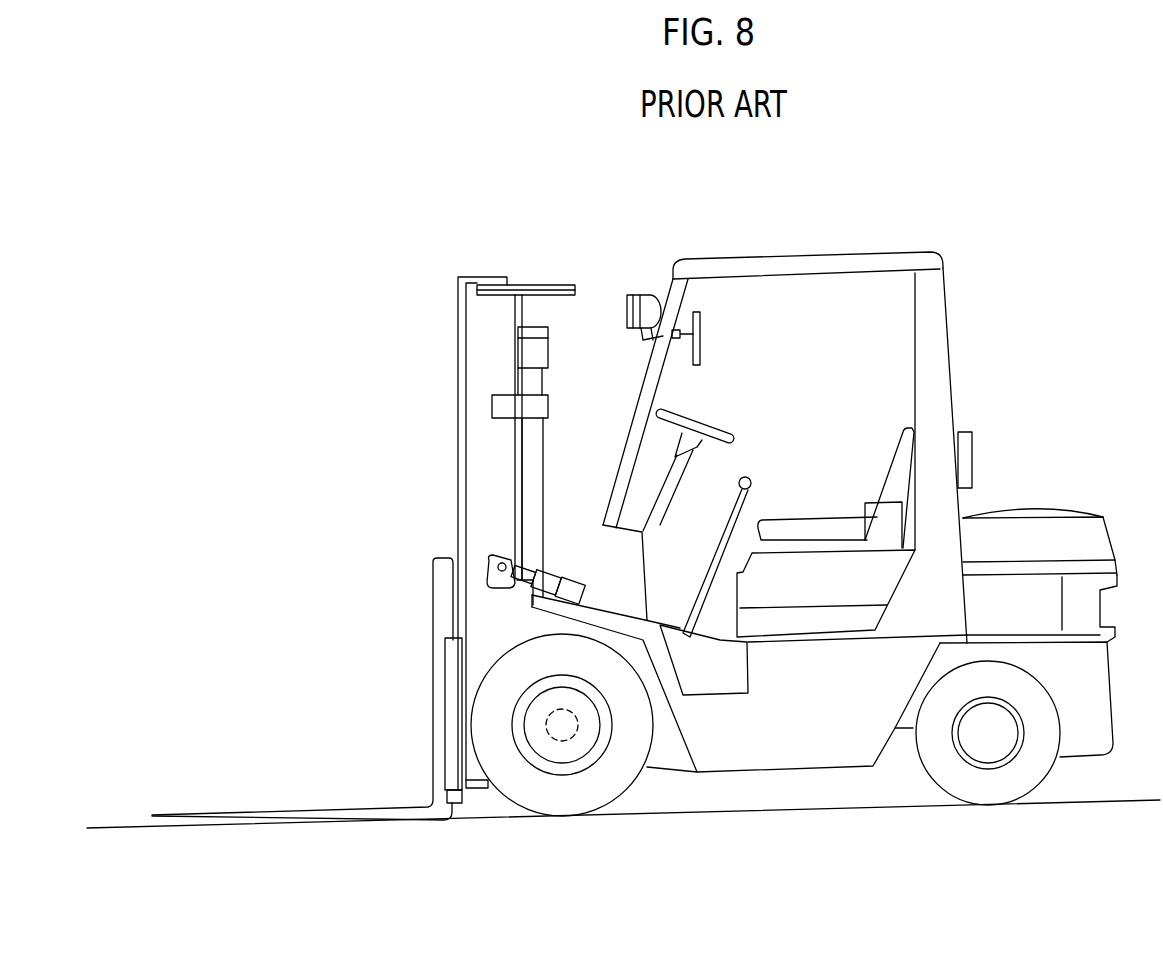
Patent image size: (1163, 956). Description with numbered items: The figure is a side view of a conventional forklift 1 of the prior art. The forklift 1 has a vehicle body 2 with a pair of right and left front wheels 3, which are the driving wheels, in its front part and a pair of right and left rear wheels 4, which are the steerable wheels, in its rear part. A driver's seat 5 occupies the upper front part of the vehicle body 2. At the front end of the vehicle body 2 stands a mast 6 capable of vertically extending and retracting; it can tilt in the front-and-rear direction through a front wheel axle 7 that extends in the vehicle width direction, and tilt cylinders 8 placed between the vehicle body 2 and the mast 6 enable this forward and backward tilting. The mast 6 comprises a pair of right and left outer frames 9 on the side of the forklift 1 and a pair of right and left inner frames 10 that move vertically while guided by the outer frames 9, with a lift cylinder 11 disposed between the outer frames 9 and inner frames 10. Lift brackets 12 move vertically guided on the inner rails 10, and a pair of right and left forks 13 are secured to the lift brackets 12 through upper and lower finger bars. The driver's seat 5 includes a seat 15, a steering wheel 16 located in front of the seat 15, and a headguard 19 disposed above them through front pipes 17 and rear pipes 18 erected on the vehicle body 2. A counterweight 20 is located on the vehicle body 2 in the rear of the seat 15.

The forklift 1 is at (1012, 426).
The vehicle body 2 is at (710, 771).
The front wheels 3 is at (562, 802).
The rear wheels 4 is at (988, 790).
The driver's seat 5 is at (771, 322).
The mast 6 is at (456, 417).
The front wheel axle 7 is at (562, 725).
The tilt cylinders 8 is at (579, 568).
The outer frames 9 is at (480, 495).
The inner frames 10 is at (458, 522).
The lift cylinder 11 is at (533, 438).
The lift brackets 12 is at (453, 653).
The forks 13 is at (343, 808).
The seat 15 is at (848, 527).
The steering wheel 16 is at (725, 427).
The front pipes 17 is at (655, 383).
The rear pipes 18 is at (925, 370).
The headguard 19 is at (842, 268).
The counterweight 20 is at (1053, 540).